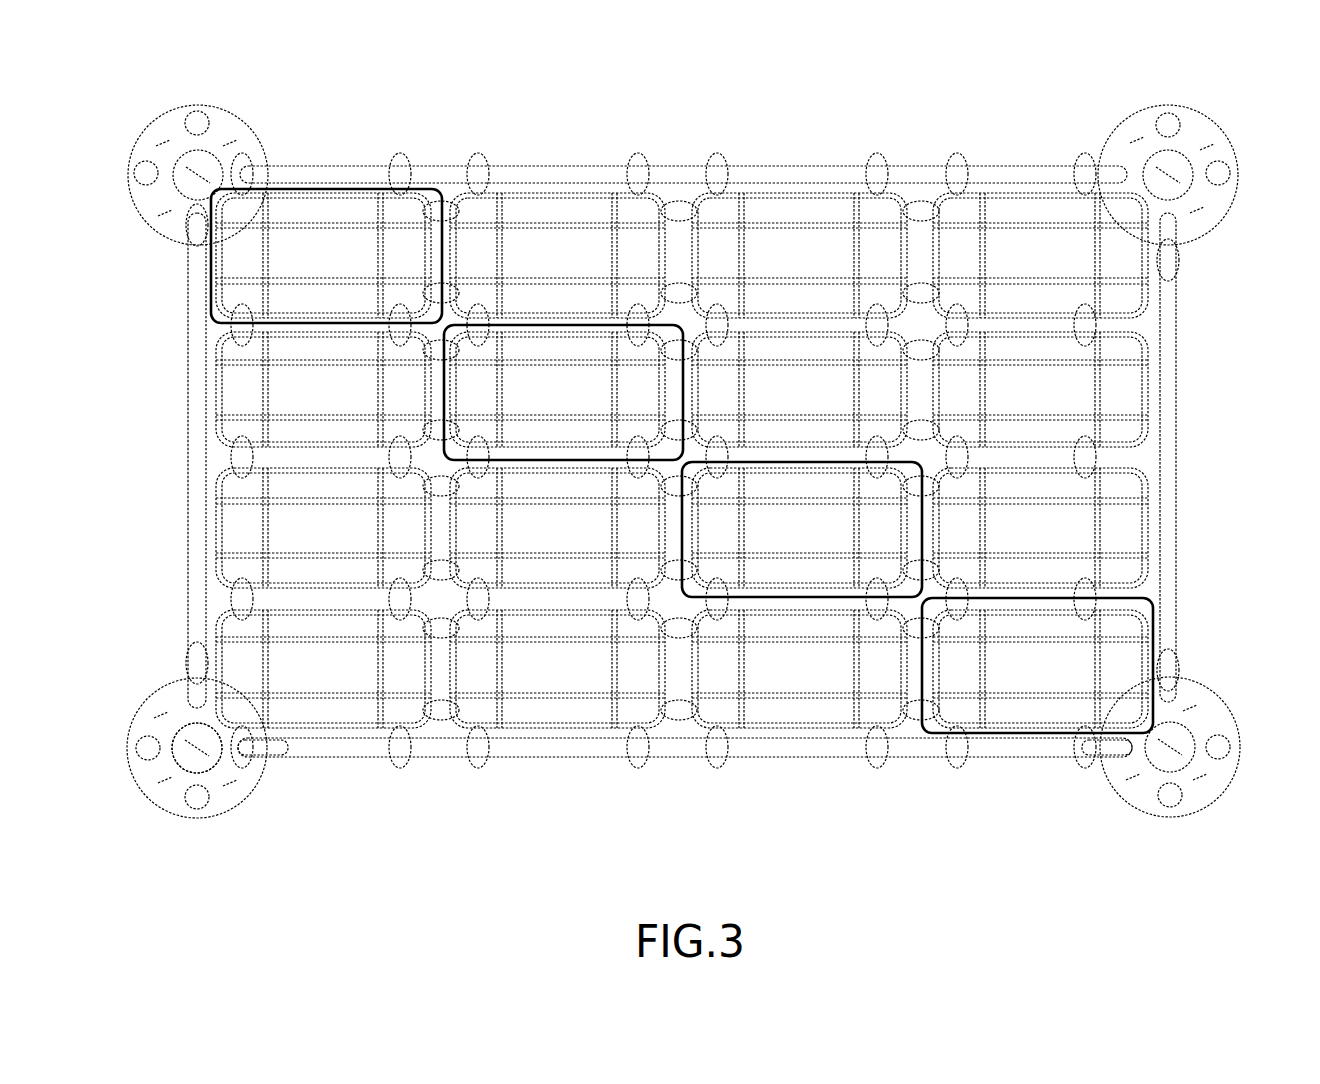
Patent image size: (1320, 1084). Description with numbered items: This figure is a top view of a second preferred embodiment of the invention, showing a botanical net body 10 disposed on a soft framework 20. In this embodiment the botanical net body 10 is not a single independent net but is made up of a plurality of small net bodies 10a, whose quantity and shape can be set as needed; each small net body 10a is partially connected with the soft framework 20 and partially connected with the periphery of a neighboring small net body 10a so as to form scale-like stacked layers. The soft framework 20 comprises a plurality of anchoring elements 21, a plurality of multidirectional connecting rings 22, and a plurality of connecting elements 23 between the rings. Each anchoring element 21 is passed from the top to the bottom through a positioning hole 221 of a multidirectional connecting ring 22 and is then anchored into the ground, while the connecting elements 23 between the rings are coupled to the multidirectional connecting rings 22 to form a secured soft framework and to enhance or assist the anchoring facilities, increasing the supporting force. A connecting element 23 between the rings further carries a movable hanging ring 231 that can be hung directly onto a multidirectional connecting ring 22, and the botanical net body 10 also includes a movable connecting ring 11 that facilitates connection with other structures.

The botanical net body 10 is at (1115, 85).
The small net body 10a is at (313, 250).
The movable connecting ring 11 is at (1177, 468).
The soft framework 20 is at (526, 804).
The anchoring element 21 is at (158, 808).
The multidirectional connecting ring 22 is at (230, 793).
The positioning hole 221 is at (157, 718).
The connecting element between the rings 23 is at (423, 762).
The movable hanging ring 231 is at (270, 760).